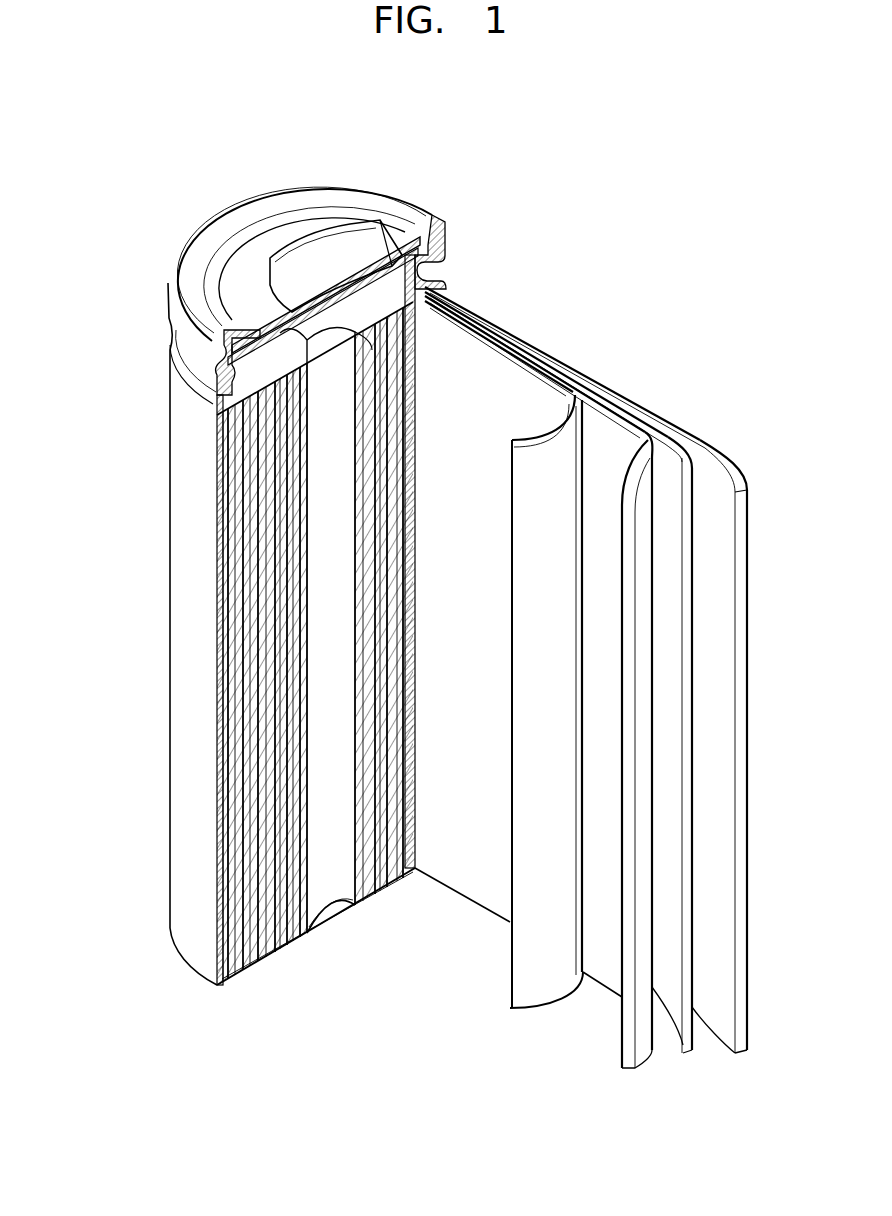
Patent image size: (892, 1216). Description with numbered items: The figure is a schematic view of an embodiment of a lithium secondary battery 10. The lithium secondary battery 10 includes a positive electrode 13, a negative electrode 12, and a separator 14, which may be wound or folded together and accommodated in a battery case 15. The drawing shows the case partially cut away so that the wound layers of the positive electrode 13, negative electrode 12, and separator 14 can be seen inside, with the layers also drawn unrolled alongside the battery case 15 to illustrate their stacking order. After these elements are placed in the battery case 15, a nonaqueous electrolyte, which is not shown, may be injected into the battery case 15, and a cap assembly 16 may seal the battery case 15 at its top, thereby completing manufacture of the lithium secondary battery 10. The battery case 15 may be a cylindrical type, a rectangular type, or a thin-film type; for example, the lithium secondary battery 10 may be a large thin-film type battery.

The lithium secondary battery 10 is at (657, 117).
The negative electrode 12 is at (730, 468).
The positive electrode 13 is at (605, 417).
The separator 14 is at (520, 362).
The battery case 15 is at (181, 630).
The cap assembly 16 is at (305, 228).